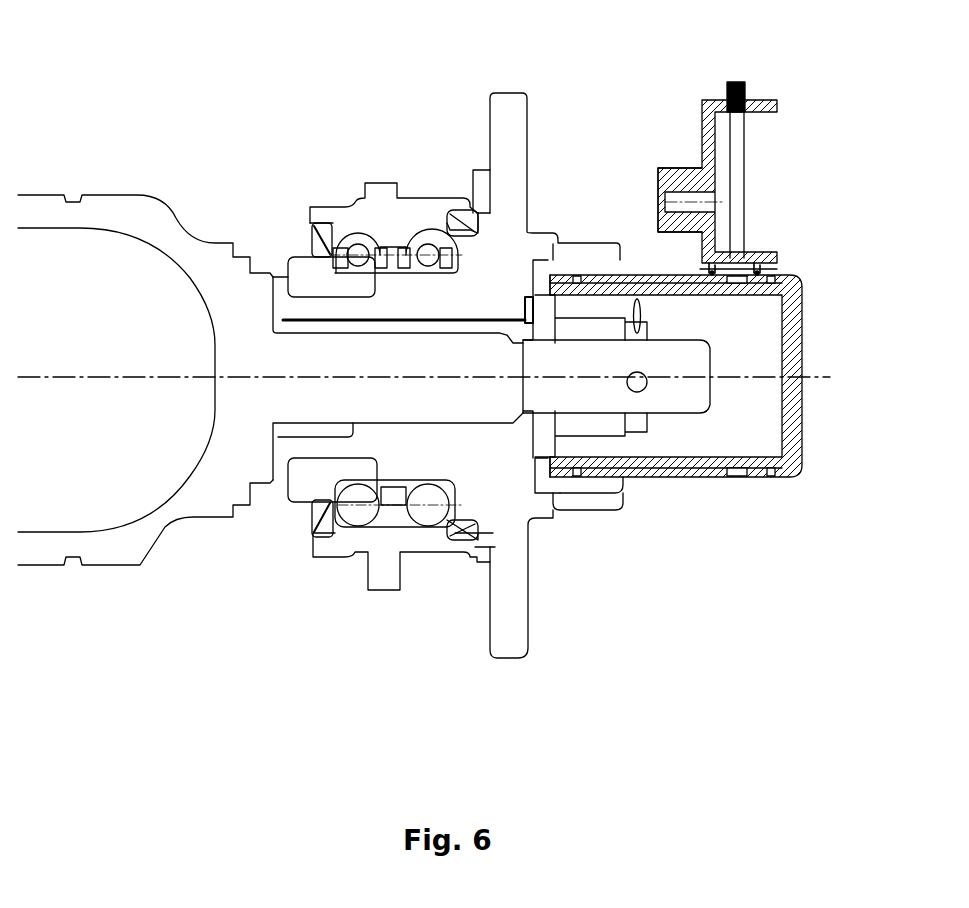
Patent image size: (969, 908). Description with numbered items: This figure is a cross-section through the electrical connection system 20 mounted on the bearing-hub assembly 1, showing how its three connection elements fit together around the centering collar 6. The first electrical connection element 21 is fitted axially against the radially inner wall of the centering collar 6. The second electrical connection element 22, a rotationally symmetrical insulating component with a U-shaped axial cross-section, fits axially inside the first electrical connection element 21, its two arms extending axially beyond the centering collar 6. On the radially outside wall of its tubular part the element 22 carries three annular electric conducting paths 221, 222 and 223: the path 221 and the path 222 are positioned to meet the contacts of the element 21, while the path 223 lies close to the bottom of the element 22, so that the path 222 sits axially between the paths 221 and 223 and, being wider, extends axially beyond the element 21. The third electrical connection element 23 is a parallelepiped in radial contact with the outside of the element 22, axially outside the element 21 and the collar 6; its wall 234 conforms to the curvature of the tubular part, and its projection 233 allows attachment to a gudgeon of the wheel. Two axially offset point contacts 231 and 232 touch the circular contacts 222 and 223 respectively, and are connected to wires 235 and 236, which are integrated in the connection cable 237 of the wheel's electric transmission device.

The bearing-hub assembly 1 is at (414, 115).
The centering collar 6 is at (595, 503).
The electrical connection system 20 is at (793, 523).
The first electrical connection element 21 is at (548, 485).
The second electrical connection element 22 is at (622, 480).
The third electrical connection element 23 is at (708, 102).
The annular electric conducting path 221 is at (550, 463).
The annular electric conducting path 222 is at (708, 477).
The annular electric conducting path 223 is at (760, 475).
The point contact 231 is at (717, 270).
The point contact 232 is at (767, 270).
The projection 233 is at (682, 177).
The wall 234 is at (698, 273).
The wire 235 is at (730, 187).
The wire 236 is at (743, 205).
The connection cable 237 is at (745, 83).